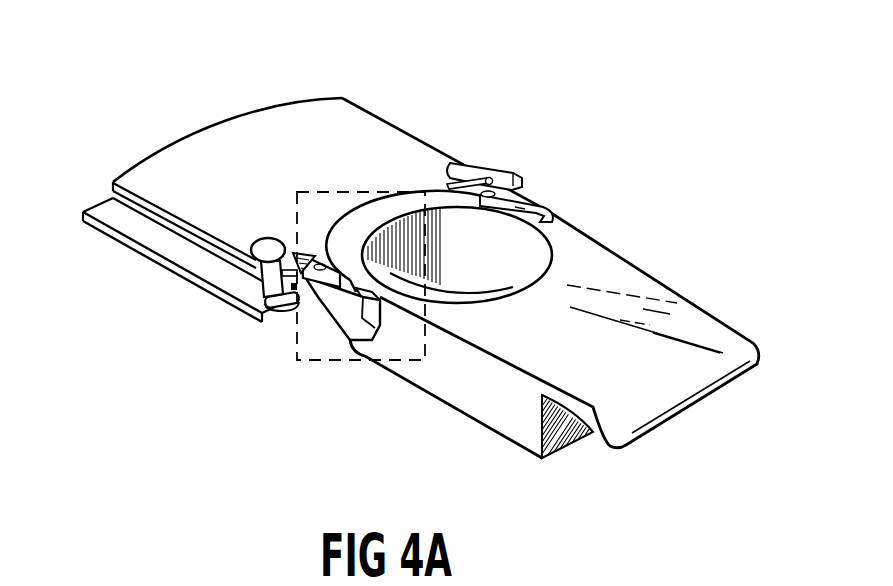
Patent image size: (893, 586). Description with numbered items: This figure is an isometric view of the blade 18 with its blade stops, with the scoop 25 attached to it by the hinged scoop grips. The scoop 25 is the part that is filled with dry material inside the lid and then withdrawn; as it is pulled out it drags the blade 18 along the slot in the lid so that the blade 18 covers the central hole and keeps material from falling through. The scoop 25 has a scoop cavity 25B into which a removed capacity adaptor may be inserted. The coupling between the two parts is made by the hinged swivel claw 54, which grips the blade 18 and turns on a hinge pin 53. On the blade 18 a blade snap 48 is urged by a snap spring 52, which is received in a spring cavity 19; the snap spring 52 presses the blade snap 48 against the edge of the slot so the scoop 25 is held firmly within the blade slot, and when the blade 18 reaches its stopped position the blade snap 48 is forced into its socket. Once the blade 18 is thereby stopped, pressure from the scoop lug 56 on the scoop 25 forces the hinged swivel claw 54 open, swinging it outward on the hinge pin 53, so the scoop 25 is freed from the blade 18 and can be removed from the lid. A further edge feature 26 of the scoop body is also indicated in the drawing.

The blade 18 is at (207, 165).
The spring cavity 19 is at (298, 253).
The scoop 25 is at (577, 313).
The scoop cavity 25B is at (475, 257).
The rim 26 is at (670, 375).
The blade snap 48 is at (270, 262).
The snap spring 52 is at (293, 287).
The hinge pin 53 is at (324, 264).
The hinged swivel claw 54 is at (322, 308).
The scoop lug 56 is at (380, 300).